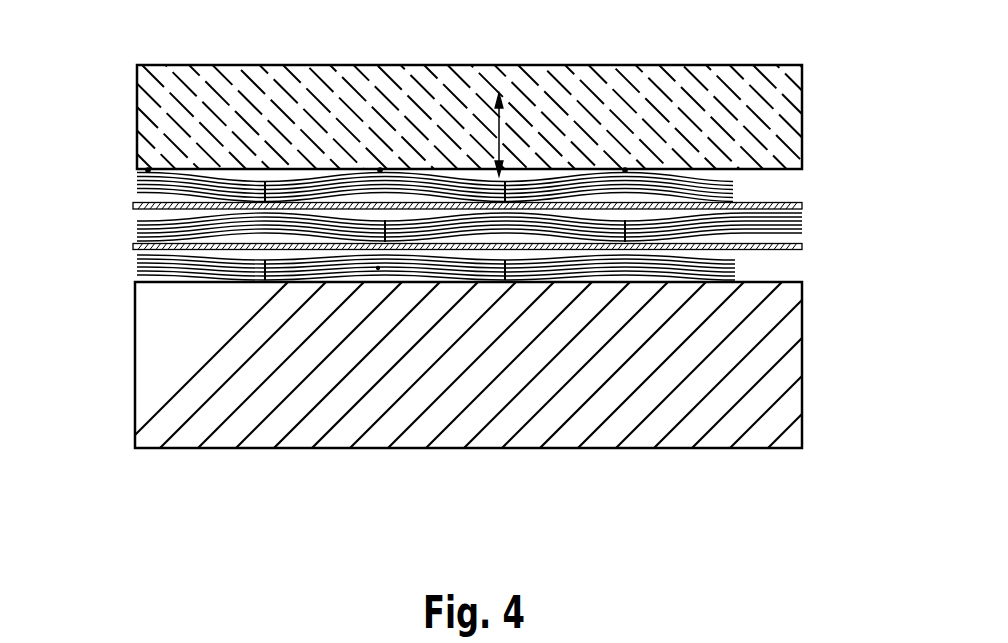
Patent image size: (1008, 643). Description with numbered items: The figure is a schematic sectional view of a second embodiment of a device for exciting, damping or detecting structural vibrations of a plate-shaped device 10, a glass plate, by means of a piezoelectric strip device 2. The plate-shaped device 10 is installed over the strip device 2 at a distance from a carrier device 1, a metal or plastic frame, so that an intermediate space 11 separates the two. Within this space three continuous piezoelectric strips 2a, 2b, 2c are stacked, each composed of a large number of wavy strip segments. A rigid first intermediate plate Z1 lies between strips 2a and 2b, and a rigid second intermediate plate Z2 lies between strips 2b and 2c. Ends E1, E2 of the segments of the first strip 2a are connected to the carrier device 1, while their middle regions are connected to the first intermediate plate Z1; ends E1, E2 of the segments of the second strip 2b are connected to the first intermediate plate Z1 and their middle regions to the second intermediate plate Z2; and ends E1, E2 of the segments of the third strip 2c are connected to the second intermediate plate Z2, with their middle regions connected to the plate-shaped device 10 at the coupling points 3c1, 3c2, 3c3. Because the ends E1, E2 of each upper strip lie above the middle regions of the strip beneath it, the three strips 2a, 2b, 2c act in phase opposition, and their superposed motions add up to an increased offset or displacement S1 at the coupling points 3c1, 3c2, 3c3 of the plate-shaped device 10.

The carrier device 1 is at (793, 395).
The plate-shaped device 10 is at (793, 112).
The piezoelectric strip device 2 is at (421, 345).
The first piezoelectric strip 2a is at (112, 263).
The second piezoelectric strip 2b is at (112, 232).
The third piezoelectric strip 2c is at (112, 183).
The coupling point 3c1 is at (148, 168).
The coupling point 3c2 is at (380, 168).
The coupling point 3c3 is at (625, 168).
The intermediate space 11 is at (378, 270).
The first intermediate plate Z1 is at (784, 247).
The second intermediate plate Z2 is at (784, 204).
The displacement S1 is at (500, 140).
The end of strip segment E1 is at (380, 240).
The end of strip segment E2 is at (380, 240).